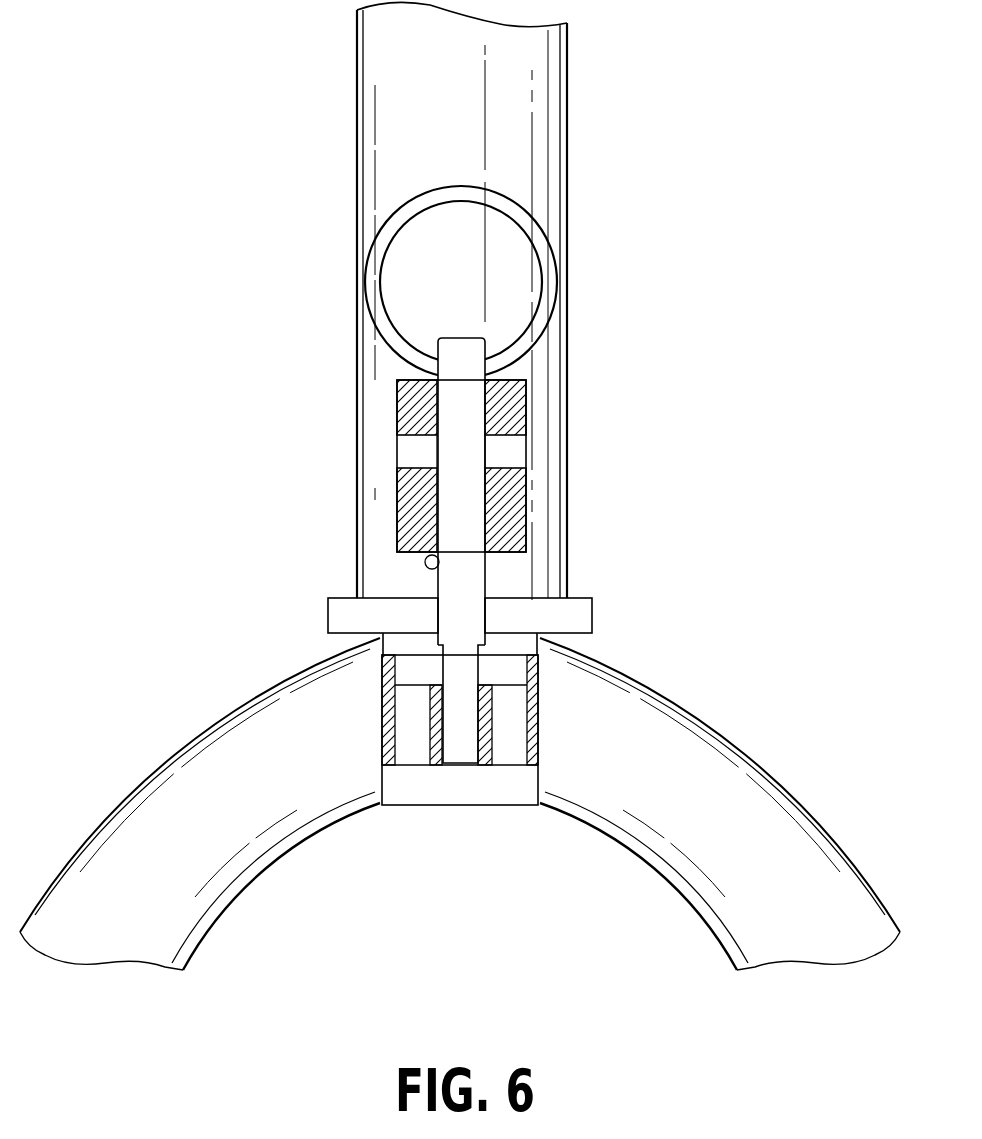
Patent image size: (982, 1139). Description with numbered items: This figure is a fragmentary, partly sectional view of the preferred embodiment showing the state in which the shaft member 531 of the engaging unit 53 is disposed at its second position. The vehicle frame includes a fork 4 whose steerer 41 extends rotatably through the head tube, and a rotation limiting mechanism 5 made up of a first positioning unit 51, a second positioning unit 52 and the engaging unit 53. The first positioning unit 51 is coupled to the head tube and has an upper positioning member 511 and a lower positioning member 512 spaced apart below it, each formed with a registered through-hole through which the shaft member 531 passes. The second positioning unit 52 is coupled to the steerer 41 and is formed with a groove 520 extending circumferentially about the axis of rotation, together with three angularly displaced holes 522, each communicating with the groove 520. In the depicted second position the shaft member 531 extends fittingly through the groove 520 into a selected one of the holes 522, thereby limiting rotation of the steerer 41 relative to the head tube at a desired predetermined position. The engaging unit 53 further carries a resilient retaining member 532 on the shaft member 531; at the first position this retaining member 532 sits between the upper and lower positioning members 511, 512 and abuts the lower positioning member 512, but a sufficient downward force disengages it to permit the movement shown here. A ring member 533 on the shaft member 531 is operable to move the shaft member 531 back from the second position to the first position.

The fork 4 is at (152, 745).
The steerer 41 is at (400, 642).
The rotation limiting mechanism 5 is at (493, 577).
The first positioning unit 51 is at (529, 527).
The upper positioning member 511 is at (395, 405).
The lower positioning member 512 is at (395, 486).
The second positioning unit 52 is at (495, 718).
The groove 520 is at (502, 667).
The holes 522 is at (502, 745).
The engaging unit 53 is at (477, 412).
The shaft member 531 is at (475, 500).
The retaining member 532 is at (540, 210).
The ring member 533 is at (425, 565).